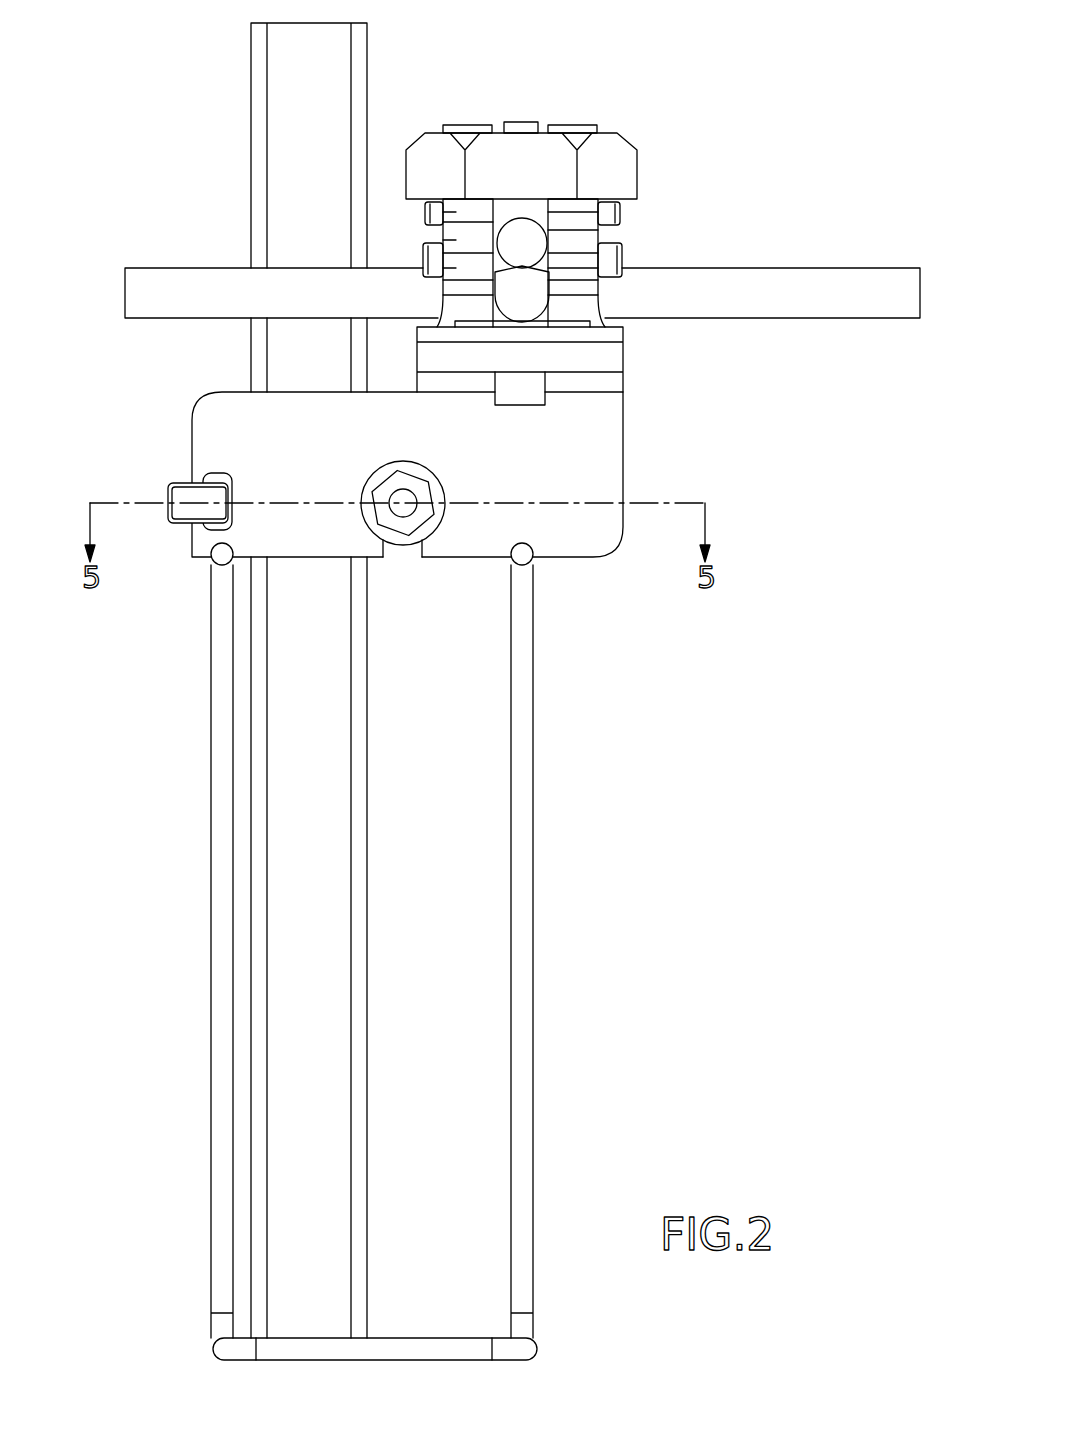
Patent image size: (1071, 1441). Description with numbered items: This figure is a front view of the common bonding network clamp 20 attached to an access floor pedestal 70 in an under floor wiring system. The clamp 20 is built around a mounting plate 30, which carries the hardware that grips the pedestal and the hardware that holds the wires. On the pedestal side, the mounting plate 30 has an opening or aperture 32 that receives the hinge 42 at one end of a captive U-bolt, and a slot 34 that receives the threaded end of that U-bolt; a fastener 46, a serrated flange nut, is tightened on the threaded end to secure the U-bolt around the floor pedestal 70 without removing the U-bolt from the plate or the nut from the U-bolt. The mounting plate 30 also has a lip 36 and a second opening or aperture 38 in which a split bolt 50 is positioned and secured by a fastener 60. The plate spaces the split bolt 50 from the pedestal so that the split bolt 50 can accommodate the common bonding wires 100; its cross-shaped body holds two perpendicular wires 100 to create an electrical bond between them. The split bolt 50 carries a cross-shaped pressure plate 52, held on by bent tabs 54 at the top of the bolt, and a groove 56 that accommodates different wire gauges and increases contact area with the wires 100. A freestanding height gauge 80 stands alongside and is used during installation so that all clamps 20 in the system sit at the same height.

The common bonding network clamp 20 is at (712, 152).
The mounting plate 30 is at (603, 455).
The opening or aperture 32 is at (213, 527).
The slot 34 is at (397, 556).
The lip 36 is at (417, 355).
The opening or aperture 38 is at (512, 373).
The hinge 42 is at (172, 485).
The fastener 46 is at (437, 512).
The split bolt 50 is at (622, 133).
The pressure plate 52 is at (620, 213).
The bent tabs 54 is at (520, 120).
The groove 56 is at (543, 310).
The fastener 60 is at (540, 397).
The access floor pedestal 70 is at (337, 77).
The freestanding height gauge 80 is at (525, 770).
The common bonding wires 100 is at (500, 243).